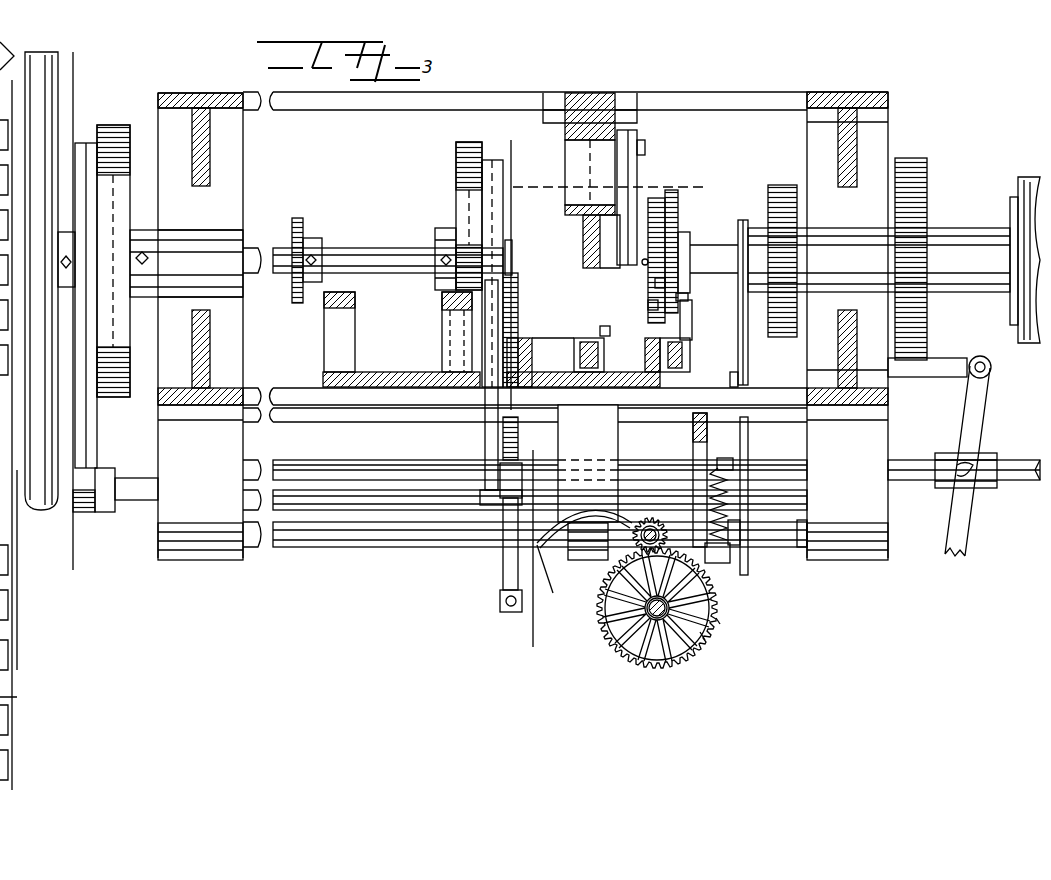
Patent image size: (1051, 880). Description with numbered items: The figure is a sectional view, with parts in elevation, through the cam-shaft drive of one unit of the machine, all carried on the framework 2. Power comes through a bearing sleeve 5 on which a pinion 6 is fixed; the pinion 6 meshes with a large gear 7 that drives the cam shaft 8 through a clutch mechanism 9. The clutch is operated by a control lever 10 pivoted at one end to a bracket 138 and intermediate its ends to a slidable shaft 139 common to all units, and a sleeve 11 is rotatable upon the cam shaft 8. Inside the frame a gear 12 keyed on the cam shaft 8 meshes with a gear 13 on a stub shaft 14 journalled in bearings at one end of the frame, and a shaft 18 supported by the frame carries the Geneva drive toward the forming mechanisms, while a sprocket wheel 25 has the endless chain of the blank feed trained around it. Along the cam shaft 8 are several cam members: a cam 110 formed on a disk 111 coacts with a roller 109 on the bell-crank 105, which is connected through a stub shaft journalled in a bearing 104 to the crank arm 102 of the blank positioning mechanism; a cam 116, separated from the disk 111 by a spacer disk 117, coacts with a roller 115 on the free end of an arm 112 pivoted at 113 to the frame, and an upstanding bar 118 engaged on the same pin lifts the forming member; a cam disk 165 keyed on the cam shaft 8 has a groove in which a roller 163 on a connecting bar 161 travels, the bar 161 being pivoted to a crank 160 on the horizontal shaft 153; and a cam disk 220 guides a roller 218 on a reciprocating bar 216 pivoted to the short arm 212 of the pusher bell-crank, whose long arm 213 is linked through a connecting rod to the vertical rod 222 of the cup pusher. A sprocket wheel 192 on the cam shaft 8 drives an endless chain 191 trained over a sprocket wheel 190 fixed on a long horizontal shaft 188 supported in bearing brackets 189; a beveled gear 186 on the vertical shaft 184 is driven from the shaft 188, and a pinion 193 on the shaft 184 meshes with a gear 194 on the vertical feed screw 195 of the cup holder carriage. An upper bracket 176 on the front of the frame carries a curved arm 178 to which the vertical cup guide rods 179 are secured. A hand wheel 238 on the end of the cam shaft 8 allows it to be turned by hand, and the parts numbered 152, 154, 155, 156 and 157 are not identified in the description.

The framework 2 is at (880, 152).
The bearing sleeve 5 is at (518, 648).
The pinion 6 is at (68, 565).
The large gear 7 is at (925, 165).
The cam shaft 8 is at (362, 258).
The clutch mechanism 9 is at (1025, 182).
The control lever 10 is at (962, 552).
The sleeve 11 is at (945, 240).
The gear 12 is at (781, 190).
The gear 13 is at (598, 188).
The stub shaft 14 is at (703, 197).
The shaft 18 is at (600, 331).
The sprocket wheel 25 is at (302, 232).
The crank arm 102 is at (582, 356).
The bearing 104 is at (651, 355).
The bell-crank 105 is at (690, 328).
The roller 109 is at (684, 301).
The cam 110 is at (678, 195).
The cam disk 111 is at (682, 242).
The arm 112 is at (583, 224).
The pivot 113 is at (665, 137).
The roller 115 is at (656, 285).
The cam 116 is at (656, 228).
The spacer disk 117 is at (648, 306).
The upstanding bar 118 is at (650, 268).
The bracket 138 is at (935, 367).
The slidable shaft 139 is at (1010, 468).
The rod 152 is at (693, 430).
The horizontal shaft 153 is at (375, 505).
The collar 154 is at (737, 548).
The disc 155 is at (785, 587).
The block 156 is at (718, 565).
The spring 157 is at (733, 467).
The crank 160 is at (108, 480).
The connecting bar 161 is at (85, 437).
The roller 163 is at (112, 192).
The cam disk 165 is at (112, 140).
The upper bracket 176 is at (588, 463).
The curved arm 178 is at (584, 521).
The cup guide rods 179 is at (557, 581).
The vertical shaft 184 is at (654, 520).
The beveled gear 186 is at (635, 565).
The long horizontal shaft 188 is at (458, 537).
The bearing brackets 189 is at (868, 547).
The sprocket wheel 190 is at (795, 542).
The endless chain 191 is at (745, 378).
The sprocket wheel 192 is at (745, 225).
The pinion 193 is at (718, 620).
The gear 194 is at (700, 632).
The vertical feed screw 195 is at (665, 615).
The short bell-crank arm 212 is at (498, 470).
The long bell-crank arm 213 is at (505, 570).
The reciprocating bar 216 is at (492, 323).
The roller 218 is at (470, 207).
The cam disk 220 is at (470, 145).
The vertical rod 222 is at (503, 612).
The hand wheel 238 is at (39, 308).